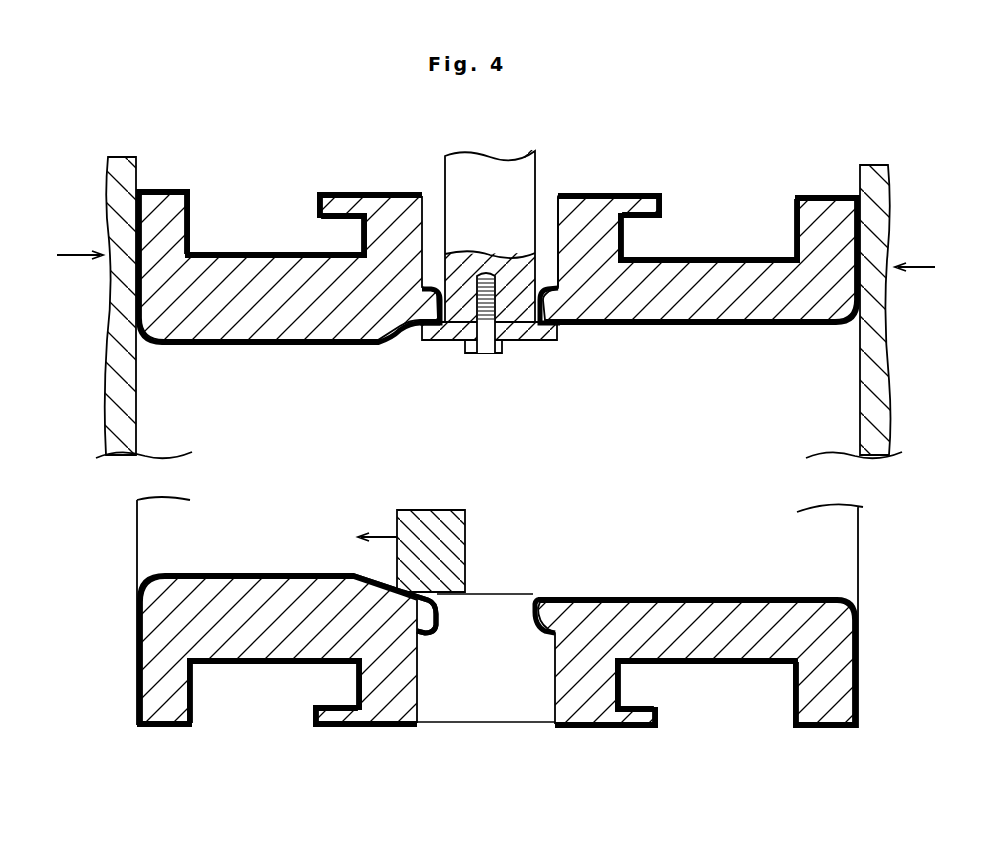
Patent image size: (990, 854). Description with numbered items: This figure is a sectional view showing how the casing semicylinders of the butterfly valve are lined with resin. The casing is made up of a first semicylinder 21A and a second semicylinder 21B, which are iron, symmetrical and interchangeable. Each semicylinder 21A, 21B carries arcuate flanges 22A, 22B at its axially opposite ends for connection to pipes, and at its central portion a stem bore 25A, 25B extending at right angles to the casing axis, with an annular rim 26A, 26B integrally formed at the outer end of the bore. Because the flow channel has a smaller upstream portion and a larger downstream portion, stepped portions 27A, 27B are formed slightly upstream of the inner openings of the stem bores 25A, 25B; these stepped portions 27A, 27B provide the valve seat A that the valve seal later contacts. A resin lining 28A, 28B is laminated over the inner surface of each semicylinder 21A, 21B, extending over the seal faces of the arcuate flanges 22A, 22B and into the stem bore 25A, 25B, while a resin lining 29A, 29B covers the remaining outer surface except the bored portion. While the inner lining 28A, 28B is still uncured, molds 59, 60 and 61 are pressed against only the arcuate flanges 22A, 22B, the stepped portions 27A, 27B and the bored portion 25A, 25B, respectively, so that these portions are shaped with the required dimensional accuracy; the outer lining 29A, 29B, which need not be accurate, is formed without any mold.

The first semicylinder 21A is at (723, 272).
The second semicylinder 21B is at (724, 650).
The arcuate flange 22A is at (183, 200).
The arcuate flange 22B is at (172, 710).
The stem bore 25A is at (548, 208).
The stem bore 25B is at (532, 708).
The annular rim 26A is at (347, 200).
The annular rim 26B is at (335, 722).
The stepped portion 27A is at (402, 342).
The stepped portion 27B is at (397, 559).
The resin lining 28A is at (672, 328).
The resin lining 28B is at (261, 574).
The resin lining 29A is at (680, 245).
The resin lining 29B is at (670, 662).
The mold 59 is at (118, 383).
The mold 60 is at (442, 548).
The mold 61 is at (532, 338).
The valve seat A is at (333, 663).